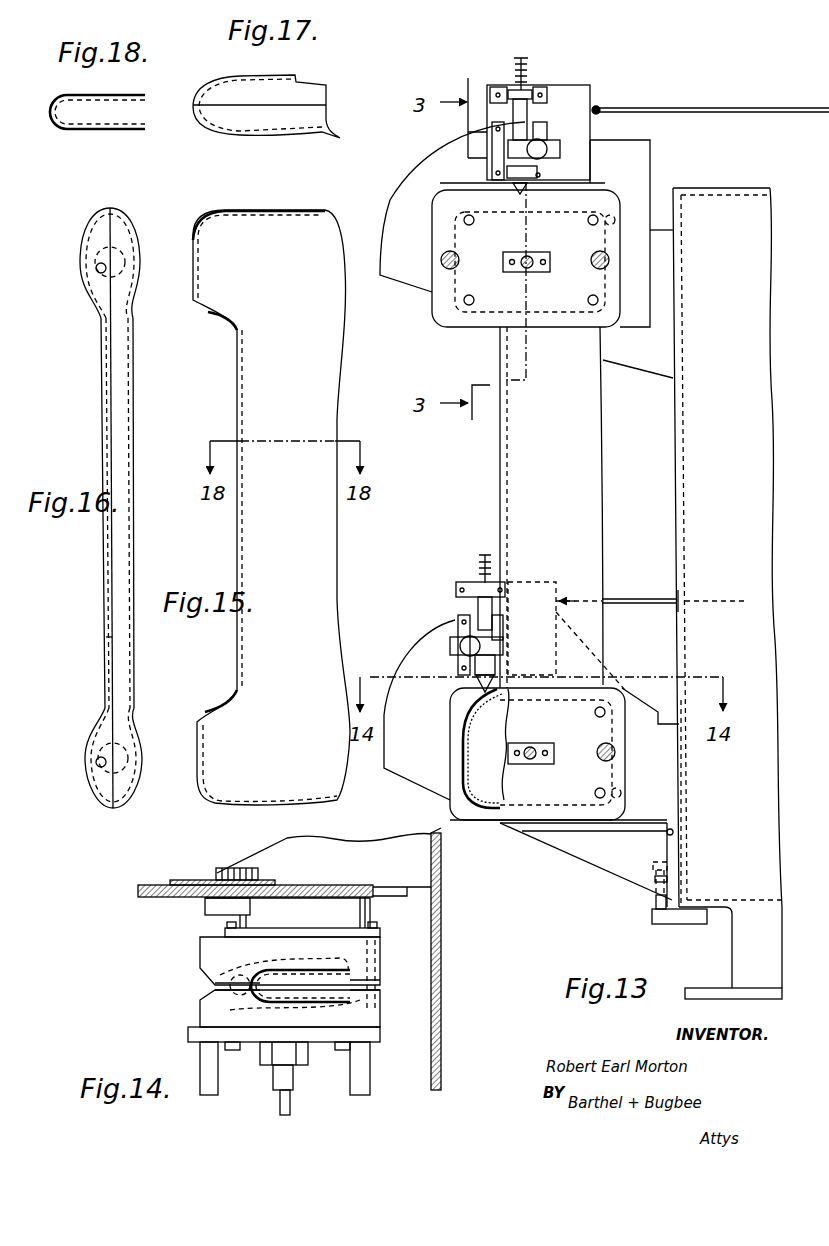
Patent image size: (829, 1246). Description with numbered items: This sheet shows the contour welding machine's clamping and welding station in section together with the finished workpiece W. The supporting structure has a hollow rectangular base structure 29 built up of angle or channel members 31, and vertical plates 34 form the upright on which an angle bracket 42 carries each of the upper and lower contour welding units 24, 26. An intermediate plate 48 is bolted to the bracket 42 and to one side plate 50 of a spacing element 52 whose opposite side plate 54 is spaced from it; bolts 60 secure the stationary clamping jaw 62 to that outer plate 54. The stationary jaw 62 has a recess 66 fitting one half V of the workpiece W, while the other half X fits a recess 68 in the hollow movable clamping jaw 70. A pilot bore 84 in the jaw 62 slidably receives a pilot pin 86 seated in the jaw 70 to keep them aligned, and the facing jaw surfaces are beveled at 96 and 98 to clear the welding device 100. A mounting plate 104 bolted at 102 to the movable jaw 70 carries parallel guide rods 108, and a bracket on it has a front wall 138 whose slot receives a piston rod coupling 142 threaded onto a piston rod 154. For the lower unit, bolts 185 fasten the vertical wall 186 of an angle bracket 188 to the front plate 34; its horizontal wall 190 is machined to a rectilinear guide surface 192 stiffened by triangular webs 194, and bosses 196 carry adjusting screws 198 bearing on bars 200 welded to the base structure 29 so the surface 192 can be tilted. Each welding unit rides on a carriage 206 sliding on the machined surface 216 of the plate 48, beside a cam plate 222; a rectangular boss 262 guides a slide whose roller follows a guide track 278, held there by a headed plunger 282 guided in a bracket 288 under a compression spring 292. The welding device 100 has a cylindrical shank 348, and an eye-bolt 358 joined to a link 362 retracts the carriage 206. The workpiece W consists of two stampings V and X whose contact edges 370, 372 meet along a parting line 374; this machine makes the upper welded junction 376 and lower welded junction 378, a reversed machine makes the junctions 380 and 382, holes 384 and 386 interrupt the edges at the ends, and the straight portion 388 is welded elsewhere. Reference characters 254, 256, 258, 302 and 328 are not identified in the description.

In FIG. 13, the upper contour welding unit 24 is at (412, 180).
In FIG. 13, the lower contour welding unit 26 is at (418, 662).
In FIG. 13, the base structure 29 is at (731, 962).
In FIG. 13, the angle or channel members 31 is at (760, 990).
In FIG. 14, the vertical plates 34 is at (443, 950).
In FIG. 13, the angle bracket 42 is at (646, 366).
In FIG. 14, the angle bracket 42 is at (341, 840).
In FIG. 13, the intermediate plate 48 is at (393, 276).
In FIG. 14, the intermediate plate 48 is at (148, 897).
In FIG. 14, the side plate 50 is at (340, 898).
In FIG. 14, the spacing element 52 is at (370, 910).
In FIG. 14, the outer side plate 54 is at (228, 931).
In FIG. 14, the bolts 60 is at (380, 926).
In FIG. 13, the stationary clamping jaw 62 is at (449, 739).
In FIG. 14, the stationary clamping jaw 62 is at (200, 963).
In FIG. 14, the recess 66 is at (282, 956).
In FIG. 14, the recess 68 is at (258, 1008).
In FIG. 13, the movable clamping jaw 70 is at (619, 202).
In FIG. 14, the movable clamping jaw 70 is at (200, 1011).
In FIG. 14, the pilot bore 84 is at (378, 946).
In FIG. 14, the pilot pin 86 is at (378, 958).
In FIG. 14, the bevel 96 is at (210, 980).
In FIG. 14, the bevel 98 is at (210, 990).
In FIG. 13, the welding device 100 is at (538, 172).
In FIG. 13, the bolts 102 is at (470, 226).
In FIG. 14, the bolts 102 is at (340, 1050).
In FIG. 13, the mounting plate 104 is at (610, 240).
In FIG. 14, the mounting plate 104 is at (380, 1036).
In FIG. 13, the guide rods 108 is at (444, 260).
In FIG. 14, the guide rods 108 is at (212, 1076).
In FIG. 13, the front wall 138 is at (535, 276).
In FIG. 14, the front wall 138 is at (260, 1058).
In FIG. 14, the piston rod coupling 142 is at (297, 1078).
In FIG. 13, the piston rod 154 is at (530, 256).
In FIG. 14, the piston rod 154 is at (292, 1108).
In FIG. 13, the bolts 185 is at (672, 846).
In FIG. 13, the vertical wall 186 is at (675, 862).
In FIG. 13, the angle bracket 188 is at (645, 888).
In FIG. 13, the horizontal wall 190 is at (570, 840).
In FIG. 13, the guide surface 192 is at (532, 836).
In FIG. 13, the triangular reinforcing webs 194 is at (600, 862).
In FIG. 13, the bosses 196 is at (652, 902).
In FIG. 13, the adjusting screws 198 is at (653, 868).
In FIG. 13, the bars 200 is at (668, 924).
In FIG. 13, the carriage 206 is at (593, 86).
In FIG. 14, the machined surface 216 is at (183, 897).
In FIG. 14, the cam plate 222 is at (268, 880).
In FIG. 14, the knurled knob 254 is at (247, 867).
In FIG. 14, the adjusting screw 256 is at (257, 862).
In FIG. 14, the clamp plate 258 is at (215, 880).
In FIG. 13, the rectangular boss 262 is at (492, 141).
In FIG. 14, the guide track 278 is at (207, 905).
In FIG. 13, the headed plunger 282 is at (512, 53).
In FIG. 13, the bracket 288 is at (533, 86).
In FIG. 13, the compression spring 292 is at (531, 70).
In FIG. 13, the guide block 302 is at (513, 80).
In FIG. 13, the roller 328 is at (548, 147).
In FIG. 13, the cylindrical shank 348 is at (547, 140).
In FIG. 13, the eye-bolt 358 is at (598, 113).
In FIG. 13, the link 362 is at (702, 108).
In FIG. 16, the contact edge 370 is at (112, 426).
In FIG. 16, the contact edge 372 is at (110, 372).
In FIG. 16, the parting line 374 is at (112, 637).
In FIG. 17, the upper welded junction 376 is at (248, 104).
In FIG. 15, the upper welded junction 376 is at (238, 210).
In FIG. 15, the lower welded junction 378 is at (228, 696).
In FIG. 14, the welded junction 380 is at (238, 812).
In FIG. 15, the welded junction 382 is at (218, 318).
In FIG. 16, the hole 384 is at (93, 272).
In FIG. 16, the hole 386 is at (98, 762).
In FIG. 15, the straight portion 388 is at (237, 553).
In FIG. 18, the workpiece W is at (85, 132).
In FIG. 17, the workpiece W is at (292, 137).
In FIG. 16, the workpiece W is at (122, 212).
In FIG. 15, the workpiece W is at (337, 398).
In FIG. 13, the workpiece W is at (500, 467).
In FIG. 14, the workpiece W is at (290, 975).
In FIG. 16, the stamping X is at (136, 336).
In FIG. 16, the stamping V is at (100, 368).